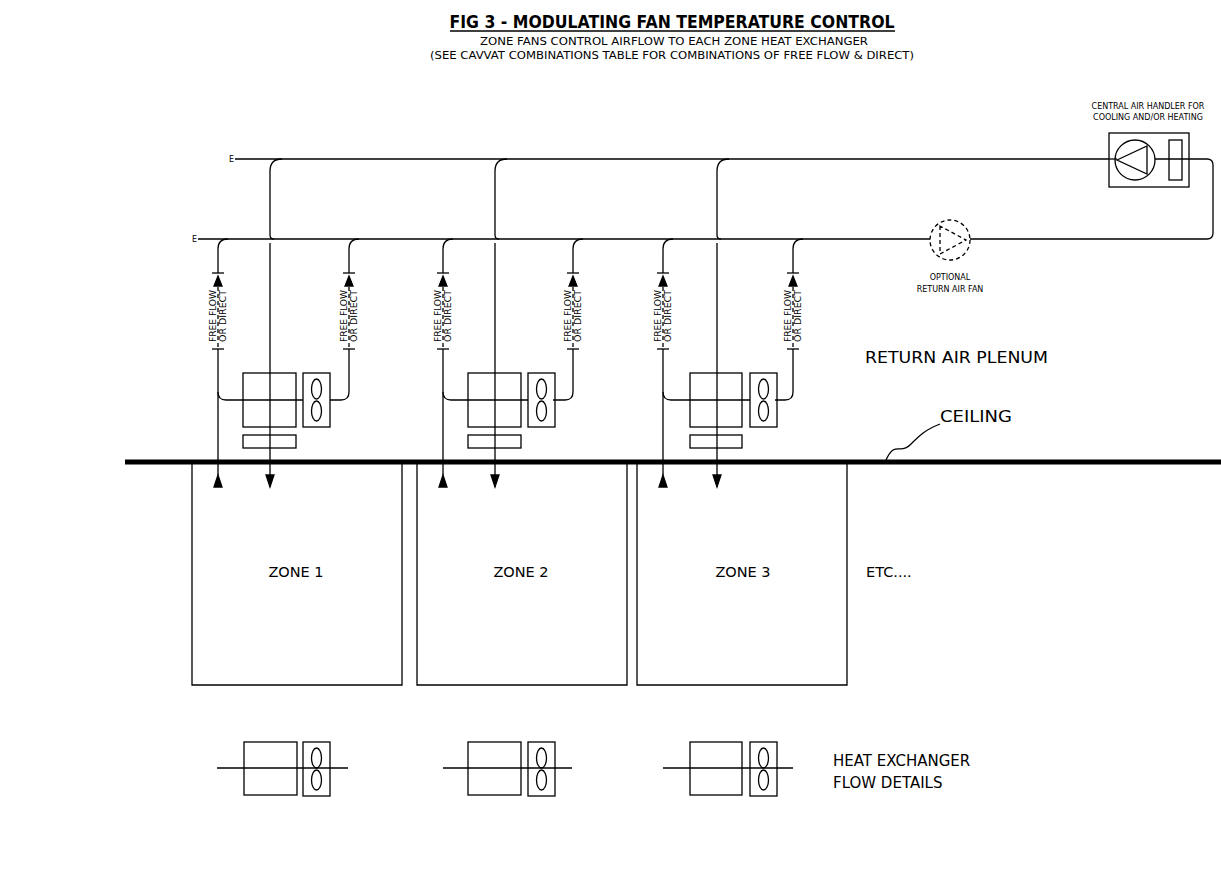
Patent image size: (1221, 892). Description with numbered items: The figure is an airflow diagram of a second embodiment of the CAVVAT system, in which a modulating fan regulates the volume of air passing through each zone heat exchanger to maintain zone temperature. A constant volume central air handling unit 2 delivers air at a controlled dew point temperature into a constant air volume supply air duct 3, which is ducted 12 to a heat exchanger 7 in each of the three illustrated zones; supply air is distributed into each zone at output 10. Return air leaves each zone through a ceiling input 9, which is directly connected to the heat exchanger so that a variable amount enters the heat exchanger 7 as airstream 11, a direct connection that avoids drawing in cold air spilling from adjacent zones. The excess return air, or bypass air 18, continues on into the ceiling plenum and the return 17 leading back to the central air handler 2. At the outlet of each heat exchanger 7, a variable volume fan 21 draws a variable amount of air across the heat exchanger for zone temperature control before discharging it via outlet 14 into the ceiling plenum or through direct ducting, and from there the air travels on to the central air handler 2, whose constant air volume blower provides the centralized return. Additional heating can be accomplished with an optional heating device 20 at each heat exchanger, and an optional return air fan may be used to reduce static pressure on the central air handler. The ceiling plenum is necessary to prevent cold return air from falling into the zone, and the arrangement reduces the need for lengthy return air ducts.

The central air handling unit 2 is at (1170, 187).
The supply air duct 3 is at (756, 159).
The heat exchanger 7 is at (297, 373).
The ceiling input 9 is at (220, 487).
The output 10 is at (271, 490).
The heat exchange airstream 11 is at (225, 400).
The ducting 12 is at (270, 215).
The outlet 14 is at (349, 366).
The return air duct 17 is at (862, 240).
The bypass air 18 is at (214, 350).
The heating device 20 is at (296, 440).
The variable volume fan 21 is at (318, 373).